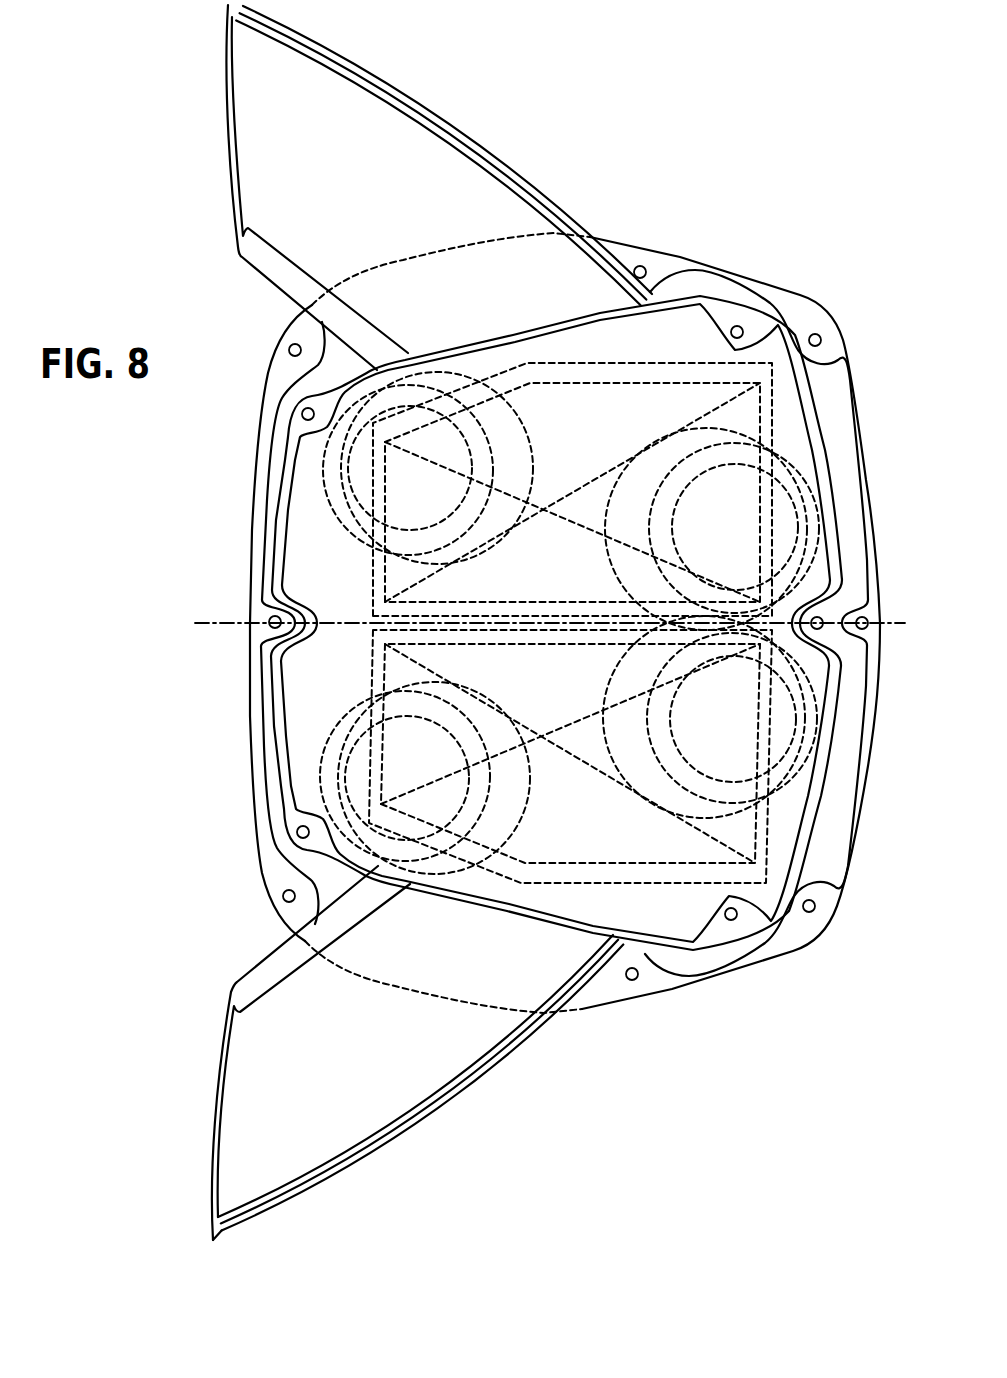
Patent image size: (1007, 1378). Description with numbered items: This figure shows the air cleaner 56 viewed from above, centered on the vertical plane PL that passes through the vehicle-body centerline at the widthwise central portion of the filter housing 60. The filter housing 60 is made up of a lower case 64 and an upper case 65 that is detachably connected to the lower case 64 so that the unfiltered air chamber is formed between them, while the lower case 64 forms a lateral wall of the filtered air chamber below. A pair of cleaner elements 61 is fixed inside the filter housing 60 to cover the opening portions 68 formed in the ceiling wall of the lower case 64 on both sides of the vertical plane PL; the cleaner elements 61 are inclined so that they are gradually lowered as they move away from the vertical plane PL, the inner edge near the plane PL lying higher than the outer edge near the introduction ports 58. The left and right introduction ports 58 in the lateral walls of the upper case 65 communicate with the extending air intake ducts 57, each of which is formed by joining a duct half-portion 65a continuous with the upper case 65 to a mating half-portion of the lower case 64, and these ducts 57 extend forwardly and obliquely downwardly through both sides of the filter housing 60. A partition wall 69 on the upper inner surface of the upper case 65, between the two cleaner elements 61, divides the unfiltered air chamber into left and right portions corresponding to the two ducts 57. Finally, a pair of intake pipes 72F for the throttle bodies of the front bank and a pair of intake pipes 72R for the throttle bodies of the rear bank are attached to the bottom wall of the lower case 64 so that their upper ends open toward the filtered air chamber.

The air cleaner 56 is at (745, 278).
The air intake duct 57 is at (418, 100).
The introduction port 58 is at (540, 335).
The filter housing 60 is at (652, 998).
The cleaner element 61 is at (397, 575).
The lower case 64 is at (733, 945).
The upper case 65 is at (480, 363).
The duct half-portion 65a is at (470, 185).
The opening portion 68 is at (605, 390).
The partition wall 69 is at (474, 612).
The intake pipe 72F is at (492, 455).
The intake pipe 72R is at (660, 485).
The vertical plane PL is at (231, 620).